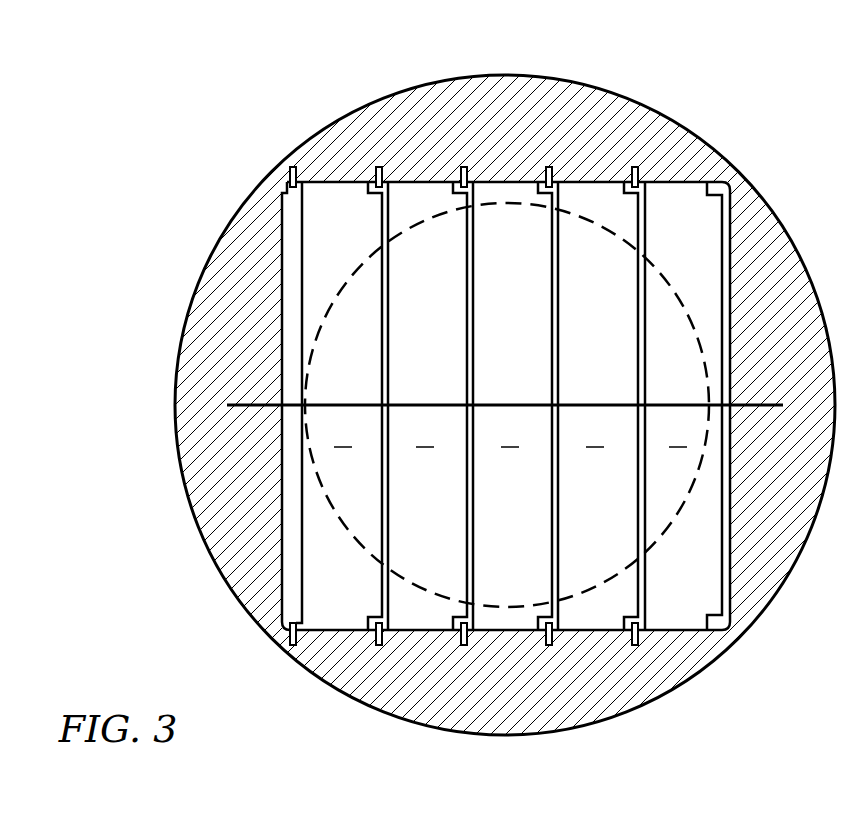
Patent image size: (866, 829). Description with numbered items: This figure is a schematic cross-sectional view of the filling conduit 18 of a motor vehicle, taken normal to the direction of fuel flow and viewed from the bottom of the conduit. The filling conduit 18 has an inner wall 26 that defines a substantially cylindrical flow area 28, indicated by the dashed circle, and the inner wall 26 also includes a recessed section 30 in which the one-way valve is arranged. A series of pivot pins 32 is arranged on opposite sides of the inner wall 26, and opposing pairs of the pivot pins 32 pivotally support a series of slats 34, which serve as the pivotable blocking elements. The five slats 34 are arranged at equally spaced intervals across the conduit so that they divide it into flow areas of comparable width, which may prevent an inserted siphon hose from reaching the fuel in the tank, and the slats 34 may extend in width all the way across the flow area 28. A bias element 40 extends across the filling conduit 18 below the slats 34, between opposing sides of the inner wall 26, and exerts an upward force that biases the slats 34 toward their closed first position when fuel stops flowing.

The filling conduit 18 is at (93, 332).
The inner wall 26 is at (731, 278).
The flow area 28 is at (343, 338).
The recessed section 30 is at (290, 247).
The pivot pins 32 is at (380, 167).
The slats 34 is at (510, 437).
The bias element 40 is at (397, 402).